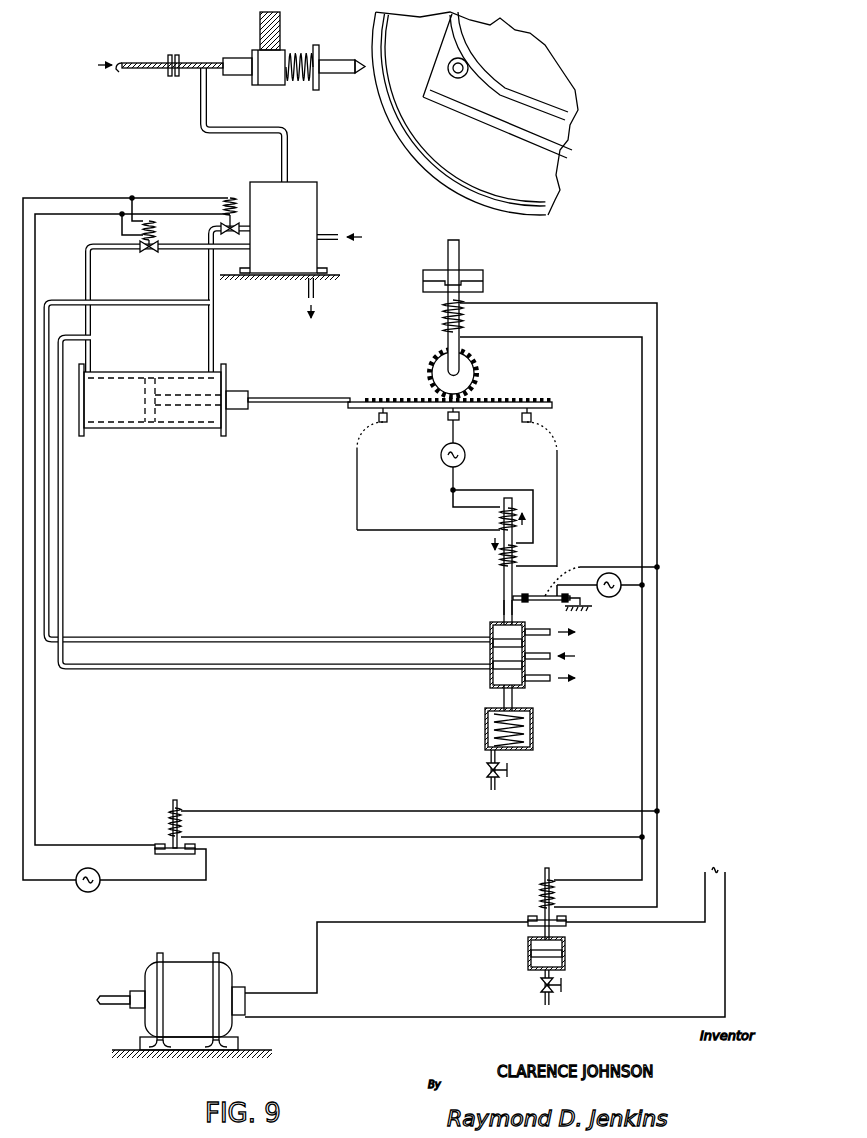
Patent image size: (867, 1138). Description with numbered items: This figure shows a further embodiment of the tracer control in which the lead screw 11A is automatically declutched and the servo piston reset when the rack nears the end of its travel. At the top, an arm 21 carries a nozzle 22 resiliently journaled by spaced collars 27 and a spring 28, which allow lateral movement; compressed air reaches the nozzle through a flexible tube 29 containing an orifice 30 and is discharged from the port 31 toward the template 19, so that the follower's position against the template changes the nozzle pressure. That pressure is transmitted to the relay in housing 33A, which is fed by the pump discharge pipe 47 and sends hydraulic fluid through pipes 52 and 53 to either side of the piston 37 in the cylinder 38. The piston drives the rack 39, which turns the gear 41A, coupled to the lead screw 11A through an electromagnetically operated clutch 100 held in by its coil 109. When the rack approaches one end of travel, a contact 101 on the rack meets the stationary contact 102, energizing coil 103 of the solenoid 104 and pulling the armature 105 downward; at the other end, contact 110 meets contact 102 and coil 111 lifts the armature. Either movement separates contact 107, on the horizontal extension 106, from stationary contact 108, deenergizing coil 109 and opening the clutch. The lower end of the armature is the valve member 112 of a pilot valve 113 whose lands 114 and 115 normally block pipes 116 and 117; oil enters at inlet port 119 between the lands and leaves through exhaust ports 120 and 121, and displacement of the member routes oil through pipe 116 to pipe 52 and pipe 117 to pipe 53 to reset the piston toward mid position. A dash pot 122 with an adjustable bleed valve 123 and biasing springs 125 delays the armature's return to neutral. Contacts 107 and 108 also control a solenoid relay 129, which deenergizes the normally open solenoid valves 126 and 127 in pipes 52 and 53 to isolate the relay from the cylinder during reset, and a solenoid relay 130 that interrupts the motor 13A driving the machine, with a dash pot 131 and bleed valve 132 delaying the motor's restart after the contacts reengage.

The lead screw 11A is at (459, 258).
The motor 13A is at (197, 962).
The template 19 is at (553, 209).
The arm 21 is at (260, 28).
The nozzle 22 is at (347, 73).
The spaced collars 27 is at (253, 75).
The spring 28 is at (298, 82).
The flexible tube 29 is at (150, 68).
The orifice 30 is at (172, 55).
The port 31 is at (366, 61).
The relay housing 33A is at (317, 204).
The piston 37 is at (143, 425).
The servo-motor cylinder 38 is at (152, 414).
The rack 39 is at (348, 397).
The gear 41A is at (480, 376).
The discharge pipe 47 is at (325, 235).
The pipe 52 is at (210, 232).
The pipe 53 is at (203, 264).
The electromagnetically operated clutch 100 is at (485, 282).
The contact 101 is at (517, 427).
The stationary contact 102 is at (460, 420).
The coil 103 is at (516, 552).
The solenoid 104 is at (489, 554).
The armature 105 is at (503, 580).
The horizontal extension 106 is at (513, 605).
The contact 107 is at (528, 602).
The stationary contact 108 is at (568, 612).
The clutch coil 109 is at (465, 326).
The contact 110 is at (384, 425).
The coil 111 is at (500, 521).
The movable valve member 112 is at (505, 605).
The pilot valve 113 is at (525, 668).
The land 114 is at (495, 639).
The land 115 is at (493, 681).
The pipe 116 is at (219, 636).
The pipe 117 is at (220, 671).
The inlet port 119 is at (549, 659).
The exhaust port 120 is at (549, 637).
The exhaust port 121 is at (532, 680).
The dash pot 122 is at (531, 733).
The adjustable bleed valve 123 is at (490, 773).
The biasing springs 125 is at (534, 738).
The solenoid operated valve 126 is at (229, 197).
The solenoid operated valve 127 is at (154, 254).
The solenoid relay 129 is at (167, 823).
The solenoid relay 130 is at (535, 909).
The dash pot 131 is at (565, 944).
The adjustable bleed valve 132 is at (535, 985).